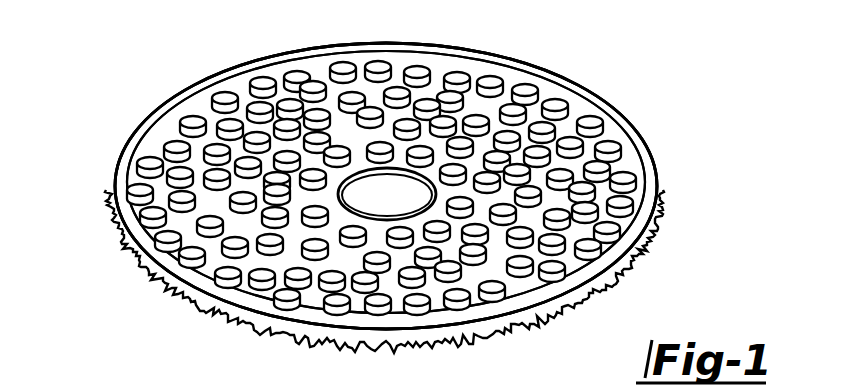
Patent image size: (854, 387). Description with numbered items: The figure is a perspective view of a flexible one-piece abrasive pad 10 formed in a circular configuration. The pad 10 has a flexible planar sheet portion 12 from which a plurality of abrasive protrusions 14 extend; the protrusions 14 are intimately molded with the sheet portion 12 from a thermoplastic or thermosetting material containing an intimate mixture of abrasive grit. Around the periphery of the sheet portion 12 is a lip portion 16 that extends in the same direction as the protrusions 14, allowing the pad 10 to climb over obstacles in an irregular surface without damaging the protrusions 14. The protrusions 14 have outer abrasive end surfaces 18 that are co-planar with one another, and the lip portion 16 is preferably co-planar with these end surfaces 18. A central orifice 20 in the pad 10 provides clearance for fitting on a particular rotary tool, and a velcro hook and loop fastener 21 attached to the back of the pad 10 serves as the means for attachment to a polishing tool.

The abrasive pad 10 is at (115, 82).
The flexible planar sheet portion 12 is at (638, 197).
The abrasive protrusions 14 is at (441, 75).
The peripheral lip portion 16 is at (601, 102).
The outer abrasive end surfaces 18 is at (415, 72).
The central orifice 20 is at (357, 177).
The velcro hook and loop fastener 21 is at (507, 339).